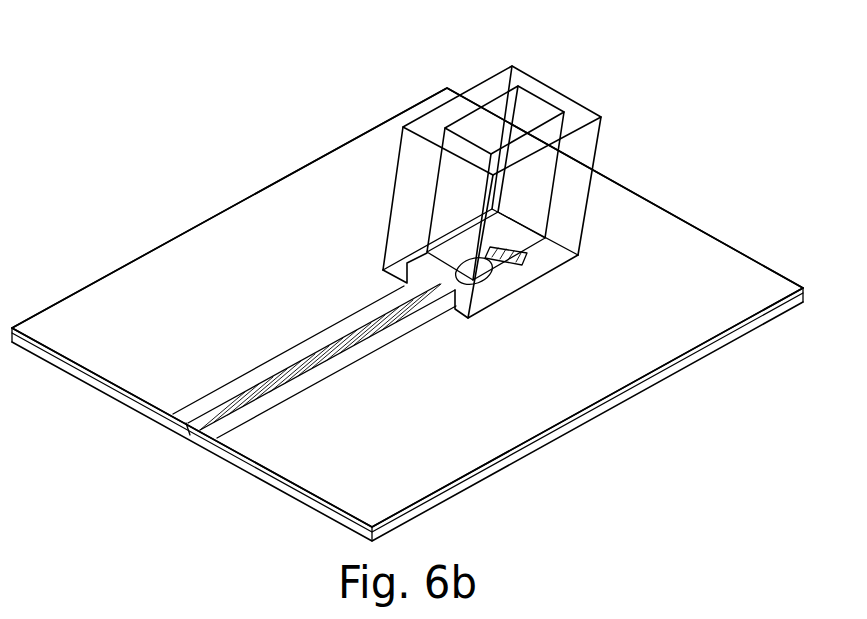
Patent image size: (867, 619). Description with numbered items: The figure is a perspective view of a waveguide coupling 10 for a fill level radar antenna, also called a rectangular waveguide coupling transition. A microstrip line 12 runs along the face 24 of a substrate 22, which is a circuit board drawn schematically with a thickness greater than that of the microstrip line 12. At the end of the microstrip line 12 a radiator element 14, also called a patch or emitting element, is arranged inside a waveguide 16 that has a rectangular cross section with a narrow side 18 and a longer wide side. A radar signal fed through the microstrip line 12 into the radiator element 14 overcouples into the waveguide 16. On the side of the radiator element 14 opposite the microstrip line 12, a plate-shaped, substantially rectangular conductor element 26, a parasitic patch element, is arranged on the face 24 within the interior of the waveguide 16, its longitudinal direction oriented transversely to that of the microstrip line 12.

The waveguide coupling 10 is at (728, 105).
The microstrip line 12 is at (183, 427).
The radiator element 14 is at (475, 302).
The waveguide 16 is at (590, 148).
The narrow side 18 is at (557, 87).
The substrate 22 is at (718, 226).
The face 24 is at (745, 270).
The conductor element 26 is at (540, 268).